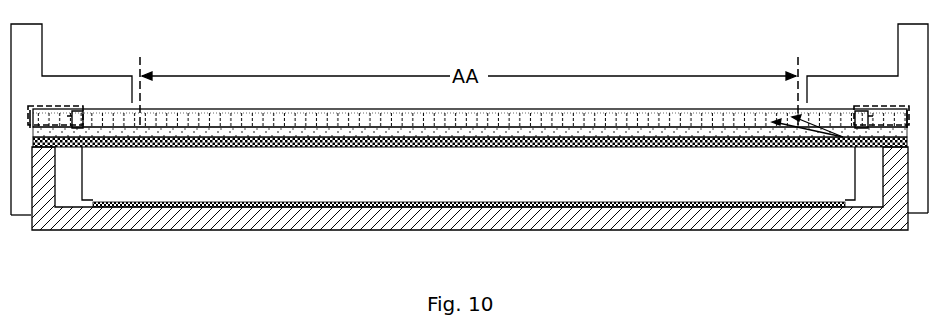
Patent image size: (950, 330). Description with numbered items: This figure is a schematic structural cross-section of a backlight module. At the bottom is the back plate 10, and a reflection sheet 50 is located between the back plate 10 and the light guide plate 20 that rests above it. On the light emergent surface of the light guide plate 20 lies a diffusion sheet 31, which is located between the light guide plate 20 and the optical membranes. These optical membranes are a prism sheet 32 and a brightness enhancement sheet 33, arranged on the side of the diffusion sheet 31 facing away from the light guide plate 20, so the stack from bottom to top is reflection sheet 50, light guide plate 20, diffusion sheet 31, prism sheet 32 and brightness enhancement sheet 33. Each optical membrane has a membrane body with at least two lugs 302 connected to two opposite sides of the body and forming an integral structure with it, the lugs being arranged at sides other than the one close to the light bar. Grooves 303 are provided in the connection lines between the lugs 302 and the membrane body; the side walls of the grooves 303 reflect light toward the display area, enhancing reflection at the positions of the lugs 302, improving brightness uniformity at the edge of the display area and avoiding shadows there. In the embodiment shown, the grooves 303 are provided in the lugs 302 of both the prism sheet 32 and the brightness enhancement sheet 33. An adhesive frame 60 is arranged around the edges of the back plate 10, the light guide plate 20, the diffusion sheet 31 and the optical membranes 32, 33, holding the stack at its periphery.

The back plate 10 is at (349, 222).
The light guide plate 20 is at (470, 180).
The diffusion sheet 31 is at (222, 140).
The prism sheet 32 is at (352, 128).
The brightness enhancement sheet 33 is at (603, 117).
The reflection sheet 50 is at (632, 205).
The adhesive frame 60 is at (922, 183).
The lug 302 is at (42, 116).
The groove 303 is at (78, 114).